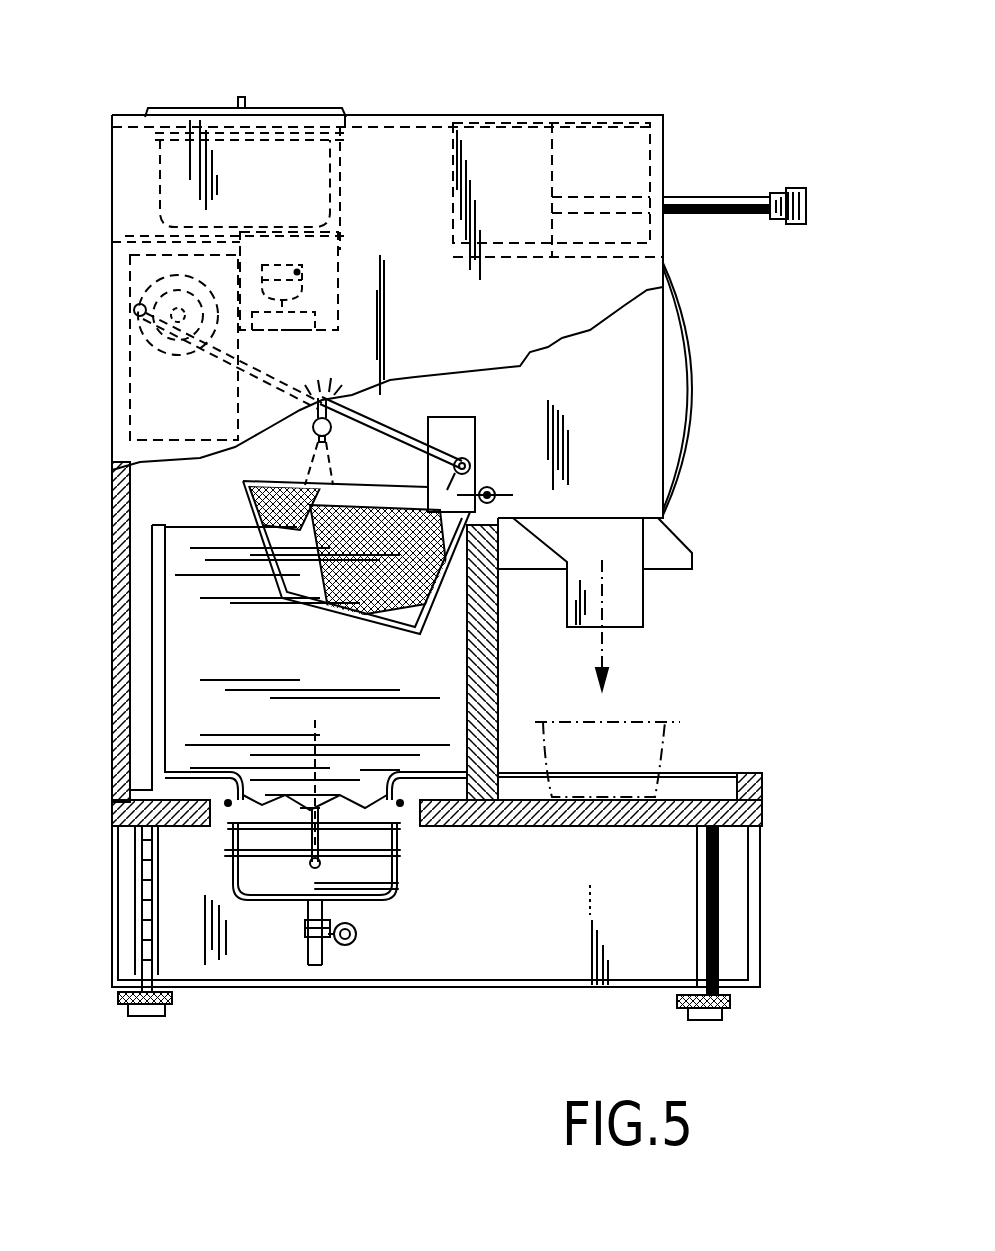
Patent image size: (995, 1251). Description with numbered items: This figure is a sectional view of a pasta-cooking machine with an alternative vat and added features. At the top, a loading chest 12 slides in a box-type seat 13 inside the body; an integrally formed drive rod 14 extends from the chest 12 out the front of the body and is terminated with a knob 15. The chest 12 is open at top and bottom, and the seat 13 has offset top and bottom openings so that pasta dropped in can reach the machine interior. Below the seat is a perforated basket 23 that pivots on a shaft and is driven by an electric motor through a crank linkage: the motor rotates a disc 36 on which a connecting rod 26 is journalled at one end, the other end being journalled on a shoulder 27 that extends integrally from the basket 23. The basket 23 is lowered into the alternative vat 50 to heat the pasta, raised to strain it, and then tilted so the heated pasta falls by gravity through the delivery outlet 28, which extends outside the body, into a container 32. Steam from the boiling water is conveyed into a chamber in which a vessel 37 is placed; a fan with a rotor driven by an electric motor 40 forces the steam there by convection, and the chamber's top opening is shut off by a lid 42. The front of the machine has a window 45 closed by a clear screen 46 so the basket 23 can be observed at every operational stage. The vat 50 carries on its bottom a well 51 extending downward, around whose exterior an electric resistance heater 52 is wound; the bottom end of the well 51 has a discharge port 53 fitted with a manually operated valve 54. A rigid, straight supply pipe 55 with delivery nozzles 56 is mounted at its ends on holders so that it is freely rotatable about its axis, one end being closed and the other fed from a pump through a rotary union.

The chest 12 is at (553, 153).
The box-type seat 13 is at (360, 125).
The drive rod 14 is at (728, 197).
The knob 15 is at (810, 198).
The perforated basket 23 is at (243, 500).
The connecting rod 26 is at (262, 372).
The shoulder 27 is at (468, 435).
The delivery outlet 28 is at (628, 600).
The container 32 is at (690, 735).
The disc 36 is at (165, 350).
The vessel 37 is at (170, 175).
The electric motor 40 is at (297, 272).
The lid 42 is at (208, 108).
The window 45 is at (705, 427).
The clear screen 46 is at (690, 333).
The vat 50 is at (155, 700).
The well 51 is at (275, 878).
The electric resistance heater 52 is at (400, 820).
The discharge port 53 is at (322, 912).
The valve 54 is at (313, 935).
The supply pipe 55 is at (350, 400).
The delivery nozzle 56 is at (326, 436).